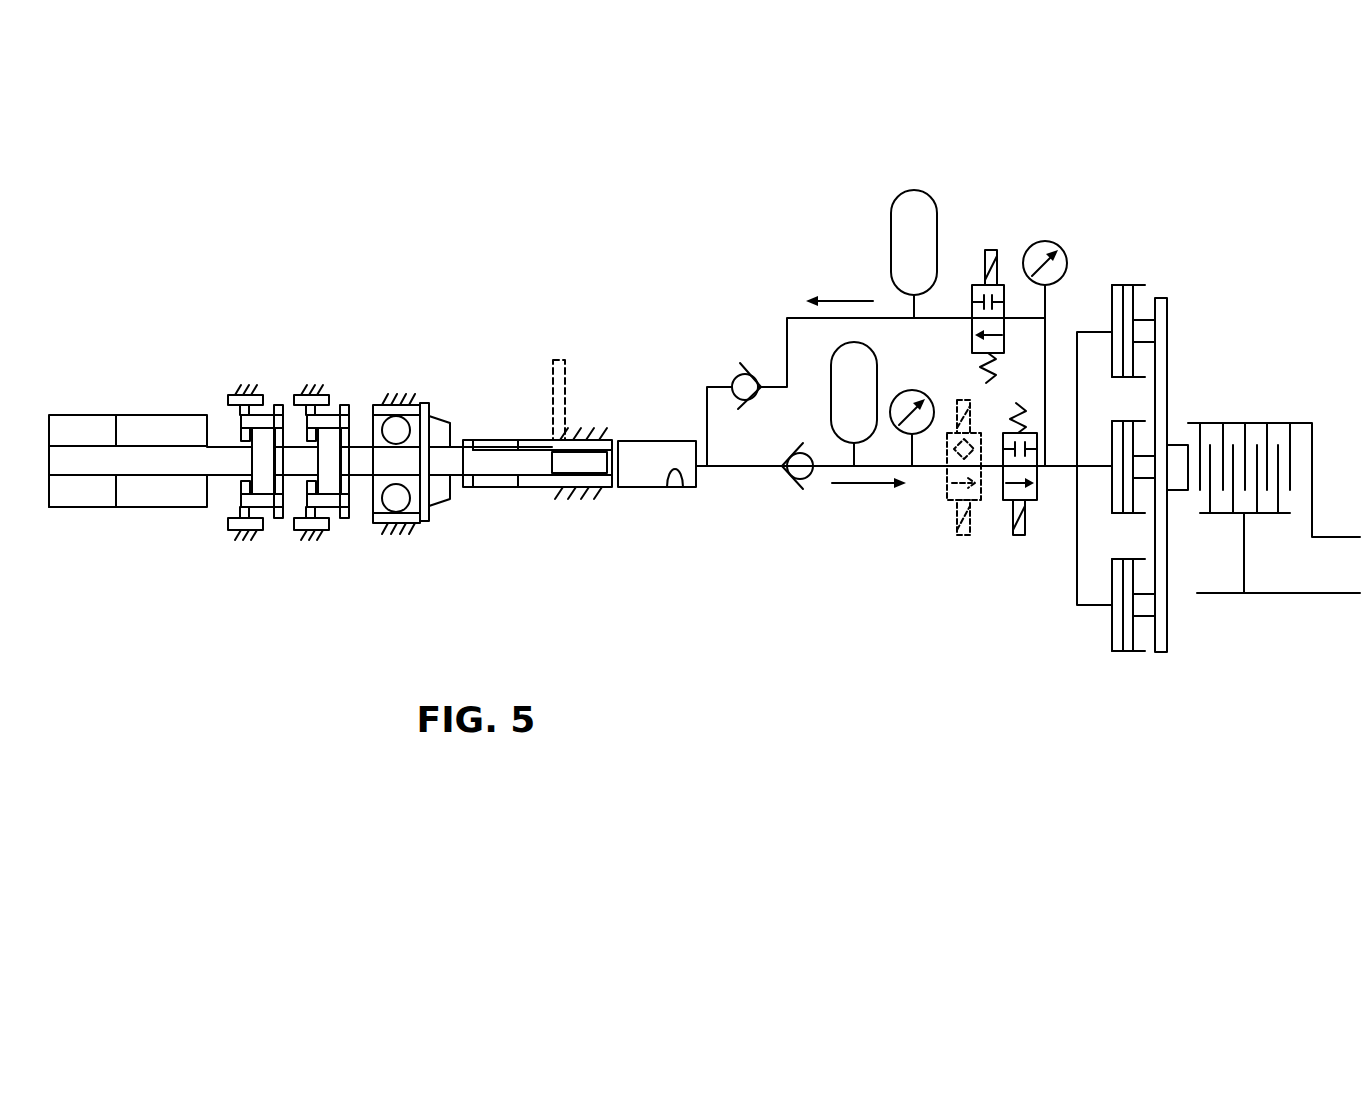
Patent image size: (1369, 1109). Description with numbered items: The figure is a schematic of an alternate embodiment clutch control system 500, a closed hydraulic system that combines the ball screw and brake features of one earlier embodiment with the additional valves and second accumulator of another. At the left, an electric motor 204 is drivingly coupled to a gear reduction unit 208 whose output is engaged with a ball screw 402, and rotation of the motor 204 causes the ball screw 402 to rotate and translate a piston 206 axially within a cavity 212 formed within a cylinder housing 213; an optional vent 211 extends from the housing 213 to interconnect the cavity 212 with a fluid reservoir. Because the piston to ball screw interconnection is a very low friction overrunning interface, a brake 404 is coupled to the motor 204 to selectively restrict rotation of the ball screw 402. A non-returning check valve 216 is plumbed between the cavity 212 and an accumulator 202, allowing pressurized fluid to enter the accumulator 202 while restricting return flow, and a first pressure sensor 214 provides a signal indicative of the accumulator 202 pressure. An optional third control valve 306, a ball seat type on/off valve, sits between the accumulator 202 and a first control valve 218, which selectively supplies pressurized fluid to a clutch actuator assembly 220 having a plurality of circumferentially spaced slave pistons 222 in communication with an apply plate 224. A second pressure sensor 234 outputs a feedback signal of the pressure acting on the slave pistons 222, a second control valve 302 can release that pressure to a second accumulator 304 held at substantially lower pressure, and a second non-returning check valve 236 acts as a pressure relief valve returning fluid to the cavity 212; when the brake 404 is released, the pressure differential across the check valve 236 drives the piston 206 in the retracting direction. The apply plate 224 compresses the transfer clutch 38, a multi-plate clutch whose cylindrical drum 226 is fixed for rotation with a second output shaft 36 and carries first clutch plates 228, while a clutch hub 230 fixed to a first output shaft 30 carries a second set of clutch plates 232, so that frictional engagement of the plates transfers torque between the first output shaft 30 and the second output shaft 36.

The electric motor 204 is at (196, 425).
The brake 404 is at (85, 490).
The gear reduction unit 208 is at (328, 358).
The vent 211 is at (556, 360).
The ball screw 402 is at (493, 488).
The piston 206 is at (608, 488).
The cylinder housing 213 is at (648, 441).
The cavity 212 is at (683, 477).
The second non-returning check valve 236 is at (752, 375).
The non-returning check valve 216 is at (788, 478).
The accumulator 202 is at (836, 393).
The first pressure sensor 214 is at (905, 392).
The second accumulator 304 is at (903, 190).
The second control valve 302 is at (972, 283).
The second pressure sensor 234 is at (1050, 245).
The third control valve 306 is at (947, 490).
The first control valve 218 is at (1032, 500).
The clutch actuator assembly 220 is at (1147, 545).
The slave pistons 222 is at (1123, 651).
The apply plate 224 is at (1170, 634).
The transfer clutch 38 is at (1263, 446).
The second set of clutch plates 232 is at (1208, 493).
The second output shaft 36 is at (1330, 537).
The cylindrical drum 226 is at (1205, 423).
The first clutch plates 228 is at (1272, 423).
The clutch hub 230 is at (1246, 555).
The first output shaft 30 is at (1297, 596).
The clutch control system 500 is at (1245, 769).